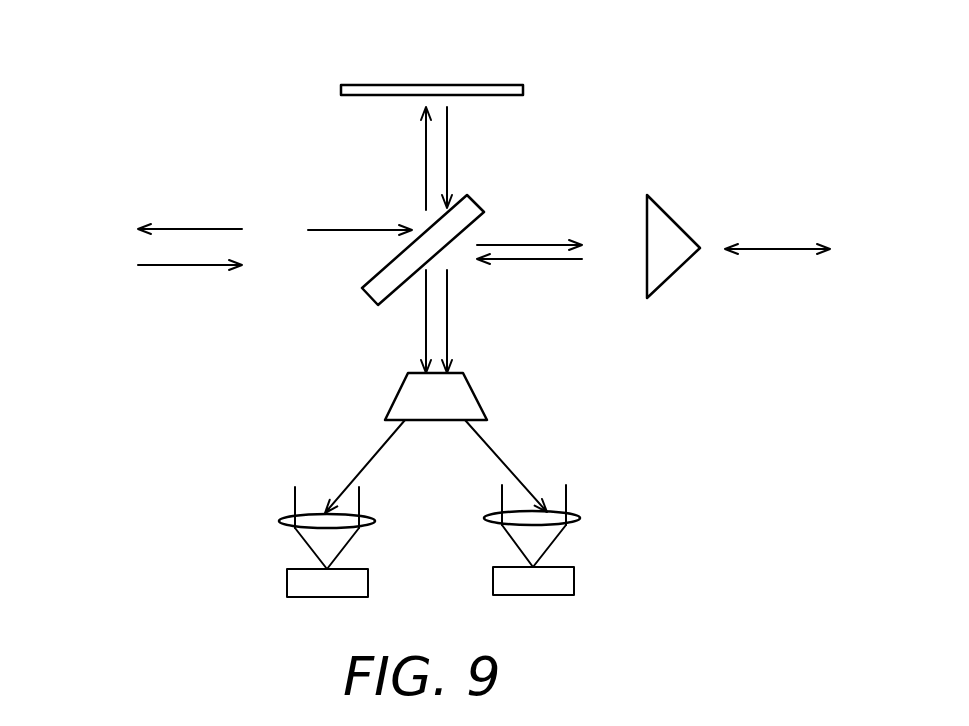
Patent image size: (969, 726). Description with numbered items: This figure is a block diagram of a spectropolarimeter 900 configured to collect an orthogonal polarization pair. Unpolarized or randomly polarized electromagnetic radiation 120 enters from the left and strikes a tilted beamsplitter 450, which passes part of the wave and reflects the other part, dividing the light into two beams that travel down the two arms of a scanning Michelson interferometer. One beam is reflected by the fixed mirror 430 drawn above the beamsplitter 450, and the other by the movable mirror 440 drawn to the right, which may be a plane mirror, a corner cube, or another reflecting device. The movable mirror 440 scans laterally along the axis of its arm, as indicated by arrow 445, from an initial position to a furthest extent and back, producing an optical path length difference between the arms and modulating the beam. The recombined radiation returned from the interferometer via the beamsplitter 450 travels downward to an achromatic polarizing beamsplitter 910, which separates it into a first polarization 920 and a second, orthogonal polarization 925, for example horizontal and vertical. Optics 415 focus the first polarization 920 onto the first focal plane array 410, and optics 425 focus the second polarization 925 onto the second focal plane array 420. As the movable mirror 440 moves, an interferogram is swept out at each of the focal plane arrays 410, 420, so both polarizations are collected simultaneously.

The spectropolarimeter 900 is at (262, 99).
The electromagnetic radiation 120 is at (198, 229).
The fixed mirror 430 is at (523, 83).
The beamsplitter 450 is at (467, 195).
The movable mirror 440 is at (680, 223).
The arrow 445 is at (775, 249).
The achromatic polarizing beamsplitter 910 is at (473, 395).
The first polarization 920 is at (503, 462).
The second polarization 925 is at (367, 460).
The optics 415 is at (580, 515).
The optics 425 is at (282, 517).
The first focal plane array 410 is at (575, 567).
The second focal plane array 420 is at (287, 578).